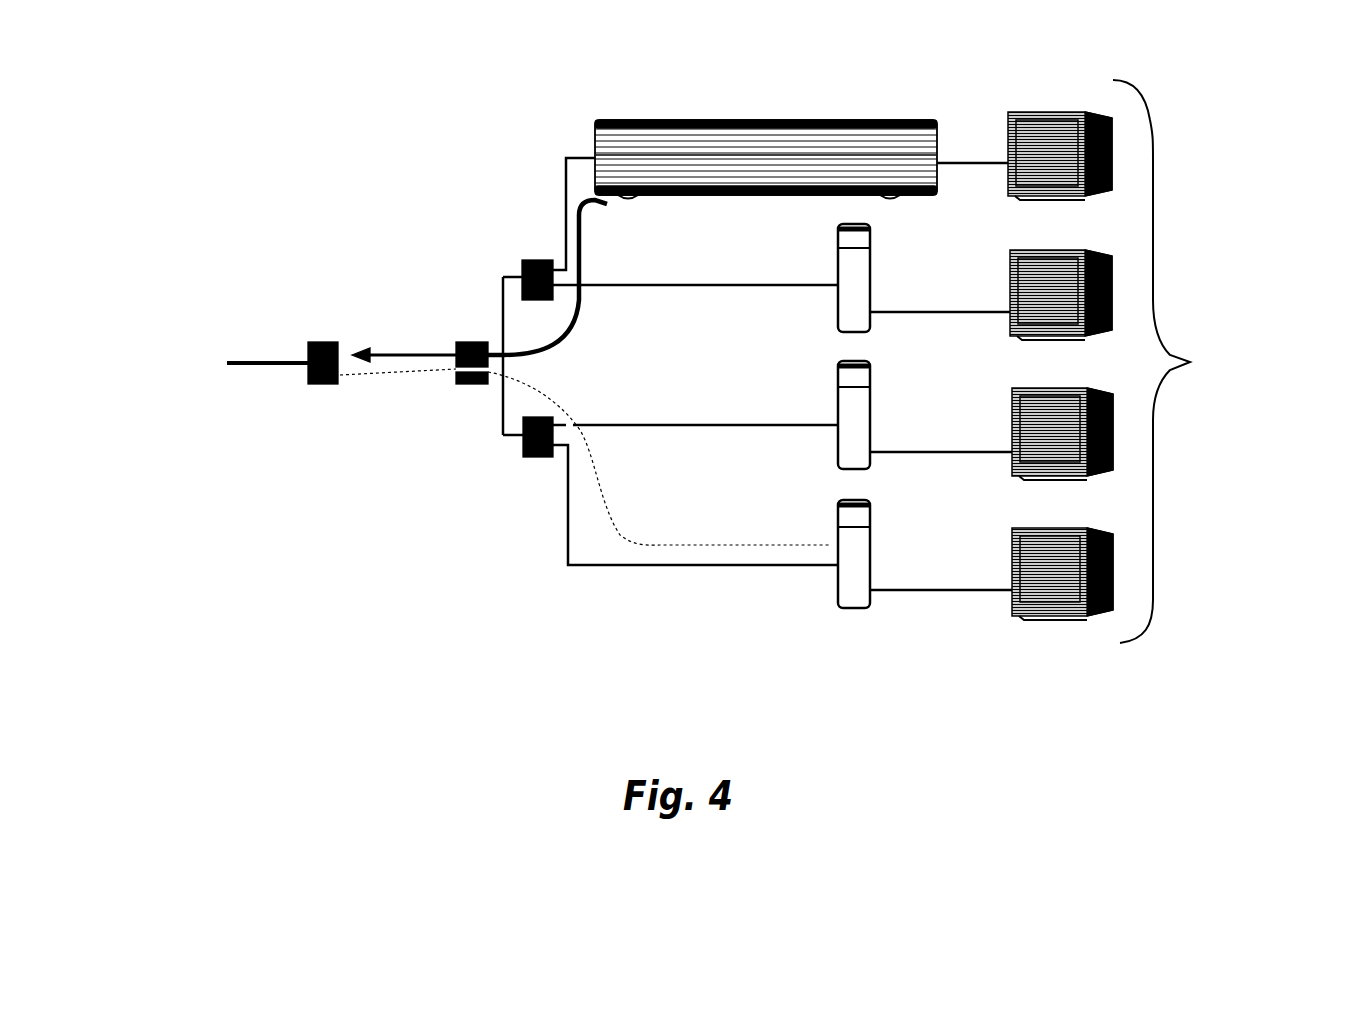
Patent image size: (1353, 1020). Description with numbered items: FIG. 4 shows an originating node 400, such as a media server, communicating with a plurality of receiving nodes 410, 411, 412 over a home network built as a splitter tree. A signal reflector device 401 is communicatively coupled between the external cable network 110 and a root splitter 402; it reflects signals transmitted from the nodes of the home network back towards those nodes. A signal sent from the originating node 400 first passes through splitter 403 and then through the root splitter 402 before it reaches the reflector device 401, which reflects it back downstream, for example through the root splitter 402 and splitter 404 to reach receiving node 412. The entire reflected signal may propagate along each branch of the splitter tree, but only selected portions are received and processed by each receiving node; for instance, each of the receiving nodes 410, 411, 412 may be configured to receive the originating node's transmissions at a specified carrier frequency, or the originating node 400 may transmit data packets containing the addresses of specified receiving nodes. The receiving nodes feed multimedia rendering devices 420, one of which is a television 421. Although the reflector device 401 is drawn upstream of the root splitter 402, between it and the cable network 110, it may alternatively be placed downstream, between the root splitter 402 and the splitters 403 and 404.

The cable network 110 is at (195, 354).
The originating node 400 is at (595, 125).
The signal reflector device 401 is at (323, 342).
The root splitter 402 is at (468, 342).
The splitter 403 is at (530, 260).
The splitter 404 is at (535, 458).
The receiving node 410 is at (833, 298).
The receiving node 411 is at (837, 437).
The receiving node 412 is at (838, 583).
The Multimedia Rendering Devices 420 is at (1119, 418).
The Television 421 is at (1047, 613).